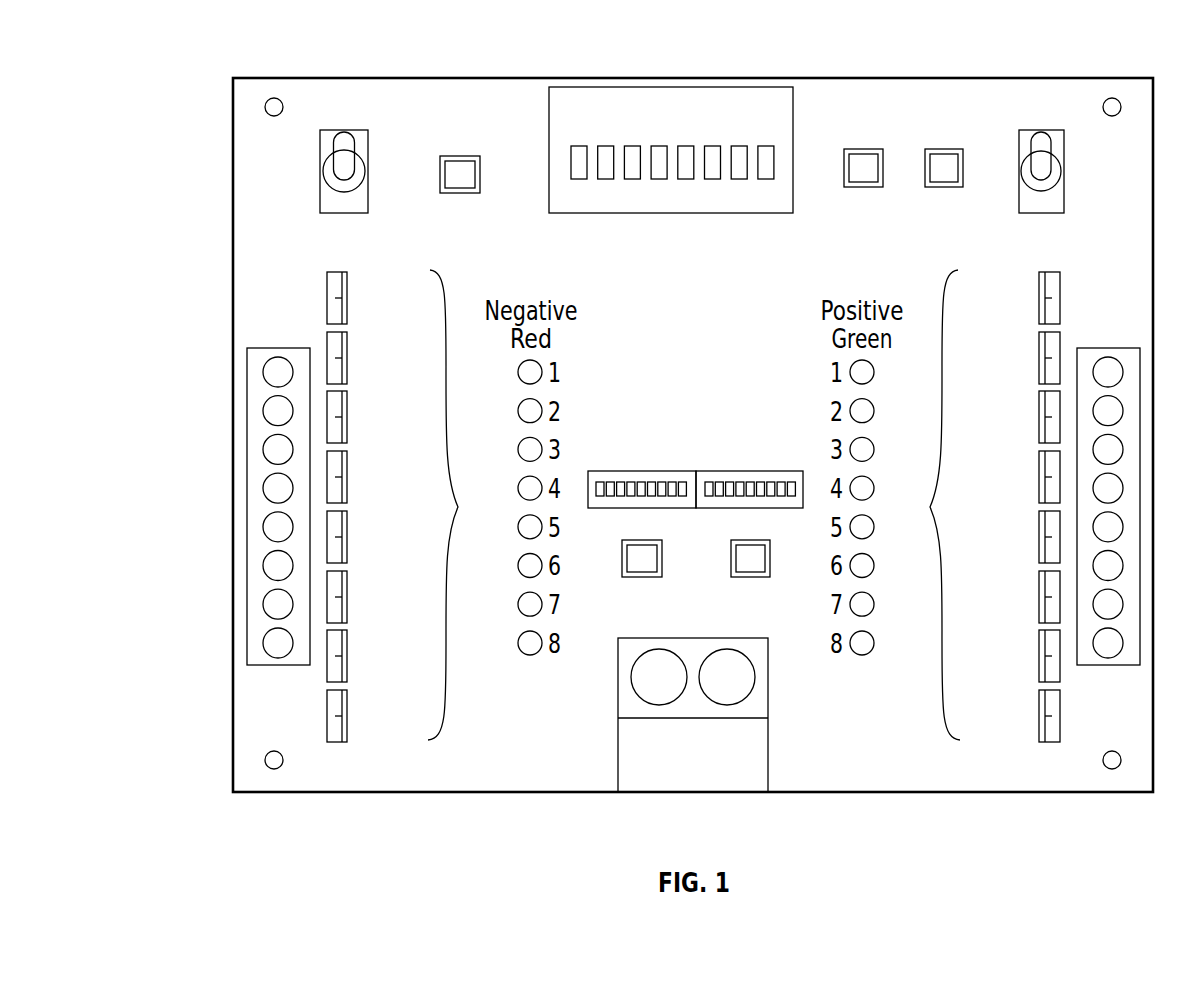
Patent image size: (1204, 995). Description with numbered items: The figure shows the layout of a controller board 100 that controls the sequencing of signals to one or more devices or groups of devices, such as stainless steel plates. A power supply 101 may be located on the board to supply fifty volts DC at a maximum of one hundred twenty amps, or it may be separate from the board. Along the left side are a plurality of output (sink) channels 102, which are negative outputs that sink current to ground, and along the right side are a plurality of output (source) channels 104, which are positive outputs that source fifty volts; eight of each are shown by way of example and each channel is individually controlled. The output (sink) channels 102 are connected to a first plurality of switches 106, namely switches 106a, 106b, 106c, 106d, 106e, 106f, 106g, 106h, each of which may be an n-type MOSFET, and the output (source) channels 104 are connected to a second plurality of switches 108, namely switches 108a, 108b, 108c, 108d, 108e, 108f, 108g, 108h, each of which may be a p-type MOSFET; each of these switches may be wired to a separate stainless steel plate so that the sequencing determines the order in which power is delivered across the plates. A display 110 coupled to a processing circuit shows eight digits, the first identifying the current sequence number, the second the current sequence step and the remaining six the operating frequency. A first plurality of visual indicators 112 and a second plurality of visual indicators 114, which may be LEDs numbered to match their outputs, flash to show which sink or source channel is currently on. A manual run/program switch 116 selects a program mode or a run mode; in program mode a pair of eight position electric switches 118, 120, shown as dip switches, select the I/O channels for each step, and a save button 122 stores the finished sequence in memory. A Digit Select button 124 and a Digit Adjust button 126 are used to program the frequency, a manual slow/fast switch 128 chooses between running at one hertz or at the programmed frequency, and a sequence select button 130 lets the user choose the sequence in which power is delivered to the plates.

The controller board 100 is at (231, 70).
The power supply 101 is at (618, 757).
The output (sink) channels 102 is at (284, 677).
The output (source) channels 104 is at (1111, 676).
The first plurality of switches 106 is at (412, 506).
The switch 106a is at (342, 298).
The switch 106b is at (342, 358).
The switch 106c is at (342, 417).
The switch 106d is at (342, 477).
The switch 106e is at (342, 537).
The switch 106f is at (342, 597).
The switch 106g is at (342, 656).
The switch 106h is at (342, 716).
The second plurality of switches 108 is at (976, 506).
The switch 108a is at (1045, 298).
The switch 108b is at (1045, 358).
The switch 108c is at (1045, 417).
The switch 108d is at (1045, 477).
The switch 108e is at (1045, 537).
The switch 108f is at (1045, 597).
The switch 108g is at (1045, 656).
The switch 108h is at (1045, 716).
The display 110 is at (610, 213).
The first plurality of visual indicators 112 is at (591, 393).
The second plurality of visual indicators 114 is at (797, 395).
The manual run/program switch 116 is at (1064, 185).
The eight position electric switch 118 is at (610, 509).
The eight position electric switch 120 is at (710, 509).
The save button 122 is at (750, 578).
The Digit Select button 124 is at (844, 170).
The Digit Adjust button 126 is at (963, 170).
The manual slow/fast switch 128 is at (320, 188).
The sequence select button 130 is at (440, 176).